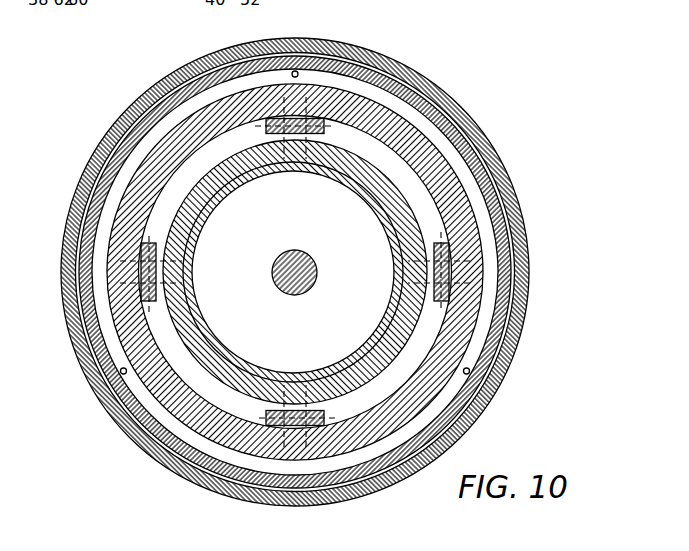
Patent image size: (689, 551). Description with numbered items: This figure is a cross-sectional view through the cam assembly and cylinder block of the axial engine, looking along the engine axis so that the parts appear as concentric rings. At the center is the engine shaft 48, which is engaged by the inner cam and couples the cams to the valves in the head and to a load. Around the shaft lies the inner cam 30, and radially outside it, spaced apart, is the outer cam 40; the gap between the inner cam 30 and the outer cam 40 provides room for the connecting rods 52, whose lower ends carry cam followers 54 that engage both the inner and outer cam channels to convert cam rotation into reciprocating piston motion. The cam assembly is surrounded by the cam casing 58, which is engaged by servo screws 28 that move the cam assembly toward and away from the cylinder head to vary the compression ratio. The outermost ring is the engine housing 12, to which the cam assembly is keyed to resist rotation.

The engine housing 12 is at (379, 45).
The cam casing 58 is at (401, 88).
The outer cam 40 is at (405, 150).
The inner cam 30 is at (397, 203).
The engine shaft 48 is at (302, 268).
The connecting rod 52 is at (448, 248).
The cam follower 54 is at (450, 270).
The servo screw 28 is at (469, 369).